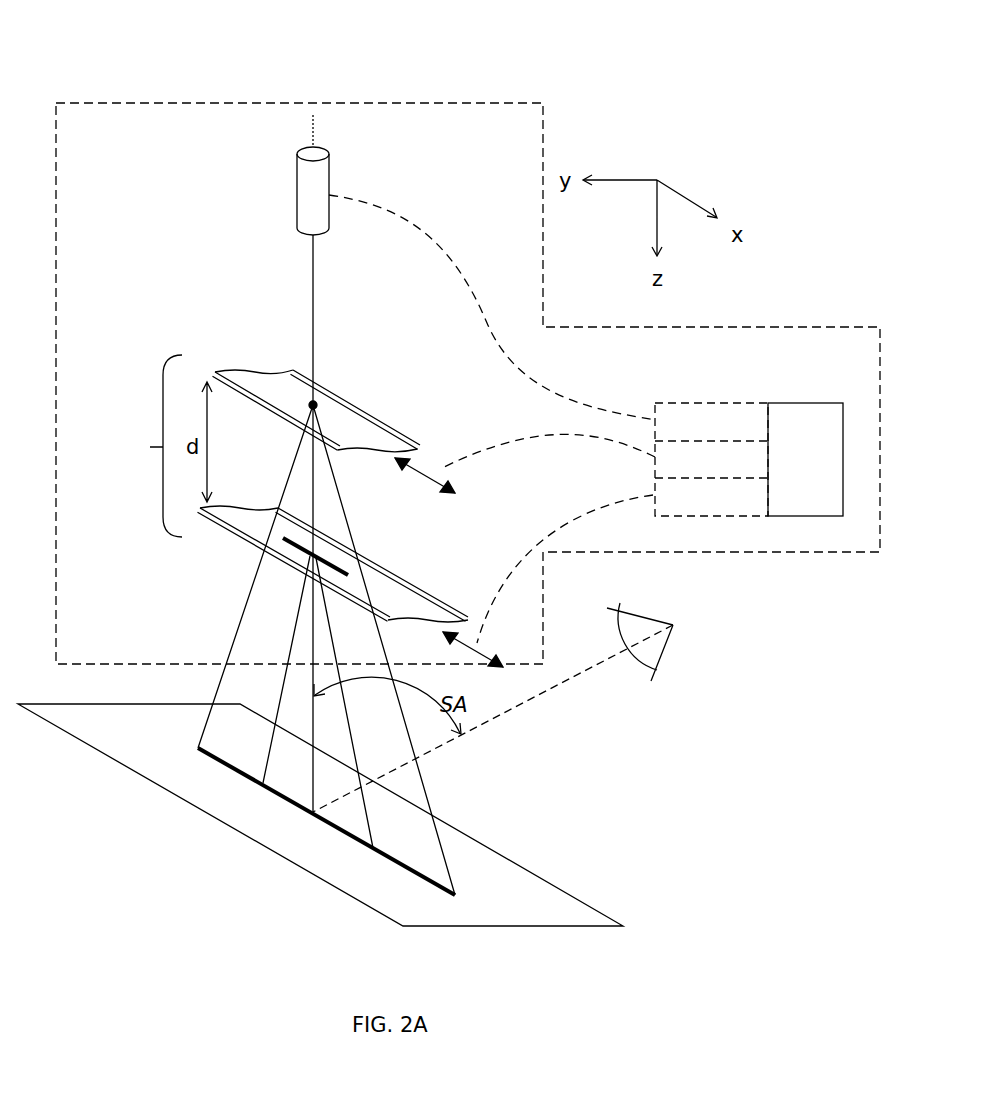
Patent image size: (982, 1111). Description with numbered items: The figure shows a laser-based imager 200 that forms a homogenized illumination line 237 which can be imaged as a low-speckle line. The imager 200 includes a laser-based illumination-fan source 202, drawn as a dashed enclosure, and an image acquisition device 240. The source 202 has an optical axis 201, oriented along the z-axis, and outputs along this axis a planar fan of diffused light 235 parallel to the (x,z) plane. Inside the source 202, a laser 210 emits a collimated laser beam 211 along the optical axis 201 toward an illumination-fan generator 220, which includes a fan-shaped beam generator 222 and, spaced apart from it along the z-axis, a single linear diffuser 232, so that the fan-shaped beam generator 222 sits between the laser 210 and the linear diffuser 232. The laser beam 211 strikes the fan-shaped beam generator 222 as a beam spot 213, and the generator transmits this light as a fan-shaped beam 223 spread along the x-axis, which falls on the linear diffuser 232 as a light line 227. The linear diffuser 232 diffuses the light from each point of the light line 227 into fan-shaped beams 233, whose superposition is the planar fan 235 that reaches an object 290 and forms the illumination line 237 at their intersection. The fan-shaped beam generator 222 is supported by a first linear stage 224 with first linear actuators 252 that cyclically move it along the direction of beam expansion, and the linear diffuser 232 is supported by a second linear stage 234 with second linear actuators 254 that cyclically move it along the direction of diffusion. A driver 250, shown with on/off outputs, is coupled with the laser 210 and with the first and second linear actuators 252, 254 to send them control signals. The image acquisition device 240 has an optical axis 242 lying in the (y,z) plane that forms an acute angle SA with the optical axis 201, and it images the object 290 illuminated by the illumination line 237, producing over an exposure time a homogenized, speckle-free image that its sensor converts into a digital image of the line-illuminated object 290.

The laser-based imager 200 is at (165, 78).
The laser-based illumination-fan source 202 is at (468, 383).
The optical axis 201 is at (313, 133).
The laser 210 is at (297, 182).
The collimated laser beam 211 is at (313, 303).
The beam spot 213 is at (314, 403).
The illumination-fan generator 220 is at (150, 447).
The fan-shaped beam generator 222 is at (380, 440).
The fan-shaped beam 223 is at (281, 478).
The first linear stage 224 is at (360, 400).
The light line 227 is at (335, 563).
The linear diffuser 232 is at (430, 612).
The fan-shaped beams 233 is at (298, 675).
The second linear stage 234 is at (422, 588).
The planar fan of diffused light 235 is at (209, 668).
The illumination line 237 is at (397, 858).
The image acquisition device 240 is at (640, 620).
The optical axis of the image acquisition device 242 is at (545, 692).
The driver 250 is at (586, 419).
The first linear actuators 252 is at (421, 481).
The second linear actuators 254 is at (486, 649).
The object 290 is at (582, 913).